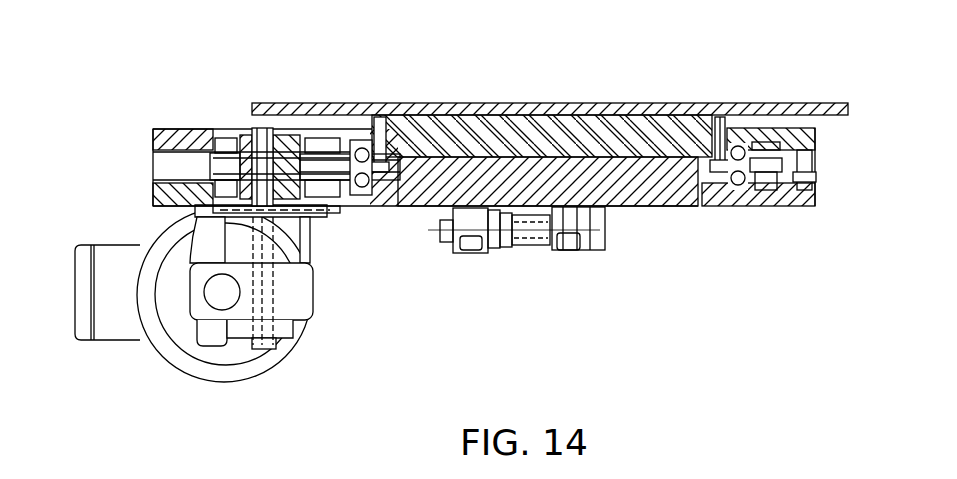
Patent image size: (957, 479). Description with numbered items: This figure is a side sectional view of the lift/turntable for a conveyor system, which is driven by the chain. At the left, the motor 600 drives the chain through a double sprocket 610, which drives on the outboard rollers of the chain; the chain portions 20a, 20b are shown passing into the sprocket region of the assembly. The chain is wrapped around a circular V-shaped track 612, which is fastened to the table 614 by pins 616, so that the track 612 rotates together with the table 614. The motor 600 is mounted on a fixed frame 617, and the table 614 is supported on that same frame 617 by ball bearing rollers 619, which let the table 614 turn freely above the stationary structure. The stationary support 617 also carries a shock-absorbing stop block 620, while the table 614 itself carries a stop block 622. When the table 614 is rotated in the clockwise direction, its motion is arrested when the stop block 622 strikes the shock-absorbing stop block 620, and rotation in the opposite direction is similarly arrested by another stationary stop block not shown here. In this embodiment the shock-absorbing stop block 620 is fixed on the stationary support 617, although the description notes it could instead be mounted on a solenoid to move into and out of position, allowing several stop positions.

The motor 600 is at (157, 252).
The double sprocket 610 is at (236, 124).
The circular V-shaped track 612 is at (331, 195).
The table 614 is at (493, 103).
The pins 616 is at (378, 122).
The fixed frame 617 is at (194, 128).
The ball bearing rollers 619 is at (742, 192).
The shock-absorbing stop block 620 is at (460, 255).
The stop block 622 is at (603, 243).
The shaft upper portion 20a is at (208, 157).
The shaft lower portion 20b is at (208, 173).